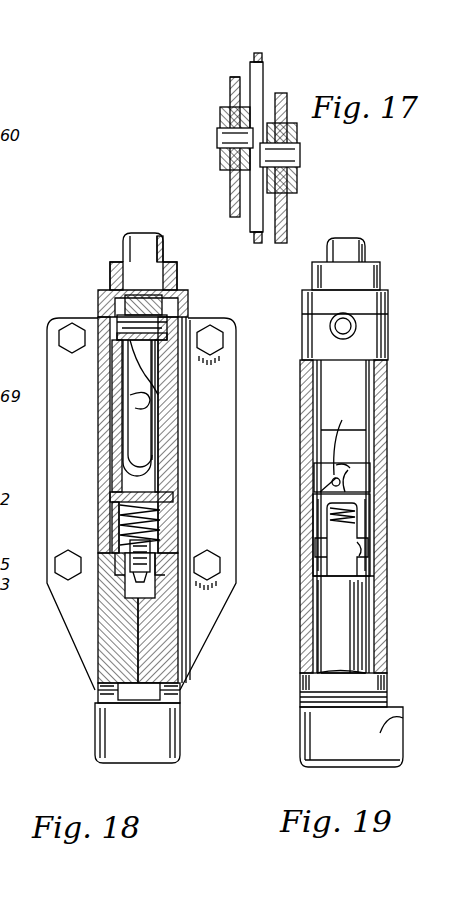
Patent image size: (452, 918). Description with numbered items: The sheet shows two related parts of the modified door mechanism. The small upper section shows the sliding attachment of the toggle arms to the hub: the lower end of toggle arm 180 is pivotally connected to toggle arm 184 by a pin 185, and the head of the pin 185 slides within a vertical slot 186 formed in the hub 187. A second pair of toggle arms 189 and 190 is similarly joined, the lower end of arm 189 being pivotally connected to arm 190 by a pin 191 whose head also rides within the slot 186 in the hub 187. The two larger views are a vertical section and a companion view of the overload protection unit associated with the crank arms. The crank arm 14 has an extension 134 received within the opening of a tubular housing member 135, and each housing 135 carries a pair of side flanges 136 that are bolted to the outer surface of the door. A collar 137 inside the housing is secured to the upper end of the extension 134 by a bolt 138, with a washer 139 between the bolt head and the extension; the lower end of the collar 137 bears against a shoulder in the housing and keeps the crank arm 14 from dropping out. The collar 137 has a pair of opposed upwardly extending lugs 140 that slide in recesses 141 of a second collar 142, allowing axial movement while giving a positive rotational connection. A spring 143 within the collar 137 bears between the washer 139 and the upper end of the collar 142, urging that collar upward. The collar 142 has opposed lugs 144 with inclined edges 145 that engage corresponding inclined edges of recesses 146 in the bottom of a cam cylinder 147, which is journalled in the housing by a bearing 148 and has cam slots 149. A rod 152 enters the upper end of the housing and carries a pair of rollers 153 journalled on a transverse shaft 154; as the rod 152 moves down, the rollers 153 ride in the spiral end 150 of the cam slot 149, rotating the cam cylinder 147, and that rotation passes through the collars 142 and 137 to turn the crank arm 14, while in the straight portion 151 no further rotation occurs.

In FIG. 18, the crank arm 14 is at (118, 730).
In FIG. 19, the crank arm 14 is at (380, 728).
In FIG. 18, the extension 134 is at (130, 634).
In FIG. 19, the extension 134 is at (348, 627).
In FIG. 18, the tubular housing member 135 is at (105, 663).
In FIG. 19, the tubular housing member 135 is at (305, 621).
In FIG. 18, the side flange 136 is at (221, 422).
In FIG. 18, the collar 137 is at (143, 534).
In FIG. 19, the collar 137 is at (318, 579).
In FIG. 18, the bolt 138 is at (120, 536).
In FIG. 18, the washer 139 is at (148, 553).
In FIG. 19, the lug 140 is at (338, 545).
In FIG. 19, the recess 141 is at (355, 514).
In FIG. 19, the collar 142 is at (318, 524).
In FIG. 19, the spring 143 is at (360, 549).
In FIG. 19, the lug 144 is at (345, 484).
In FIG. 19, the inclined edge 145 is at (340, 440).
In FIG. 19, the recess 146 is at (348, 470).
In FIG. 18, the cam cylinder 147 is at (183, 387).
In FIG. 19, the cam cylinder 147 is at (320, 384).
In FIG. 18, the bearing 148 is at (168, 449).
In FIG. 19, the bearing 148 is at (318, 448).
In FIG. 18, the cam slot 149 is at (128, 396).
In FIG. 18, the spiral end 150 is at (130, 353).
In FIG. 18, the straight portion 151 is at (140, 443).
In FIG. 18, the rod 152 is at (123, 243).
In FIG. 18, the roller 153 is at (183, 311).
In FIG. 18, the shaft 154 is at (170, 285).
In FIG. 17, the toggle arm 180 is at (238, 111).
In FIG. 17, the toggle arm 184 is at (284, 214).
In FIG. 17, the pin 185 is at (282, 158).
In FIG. 17, the vertical slot 186 is at (262, 79).
In FIG. 17, the hub 187 is at (262, 61).
In FIG. 17, the toggle arm 189 is at (230, 85).
In FIG. 17, the toggle arm 190 is at (230, 197).
In FIG. 17, the pin 191 is at (217, 139).